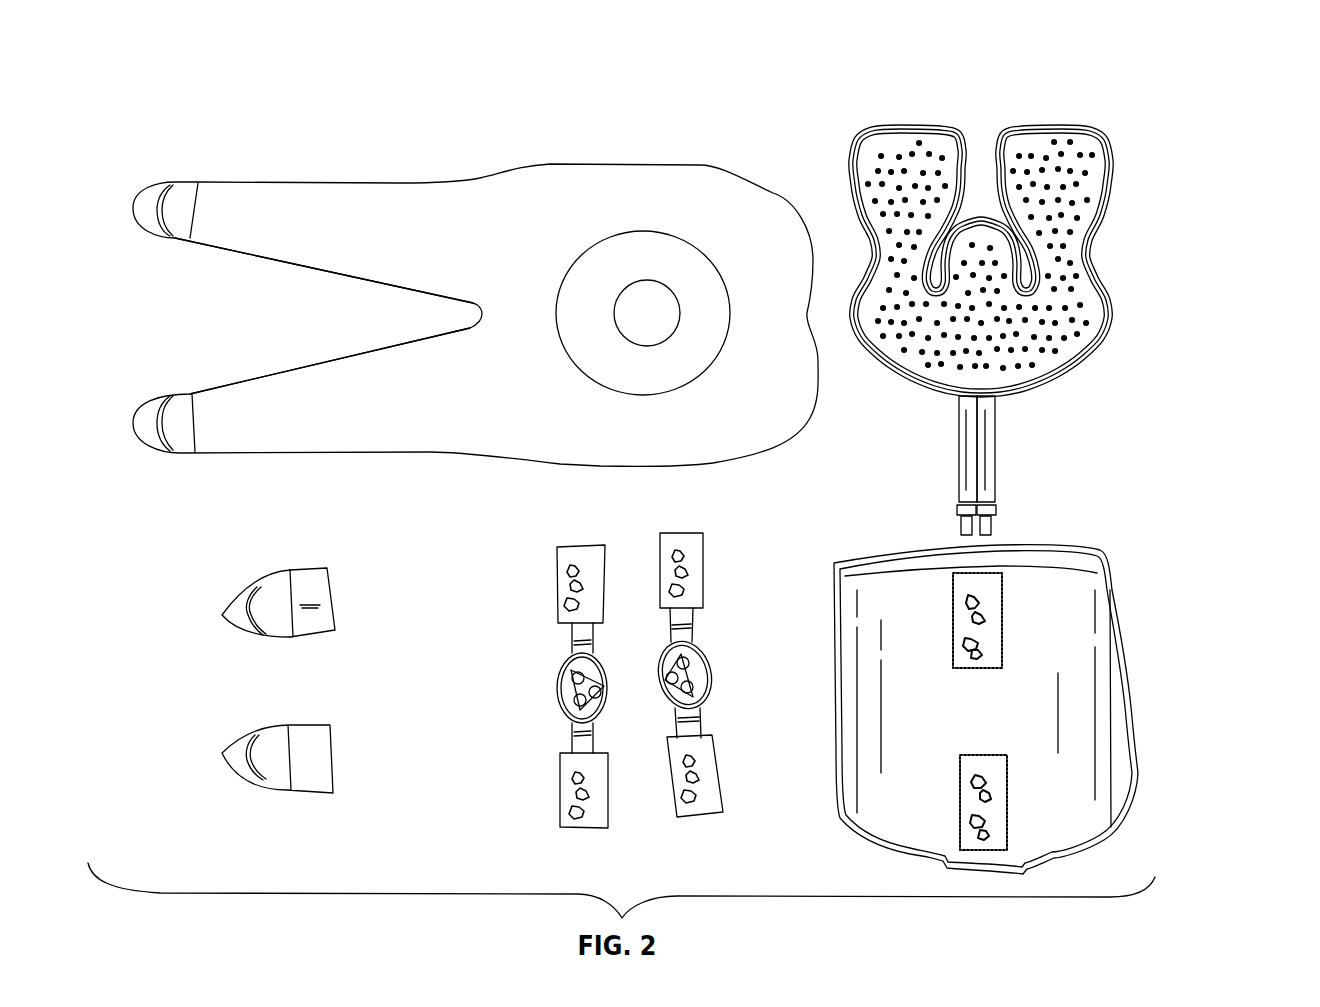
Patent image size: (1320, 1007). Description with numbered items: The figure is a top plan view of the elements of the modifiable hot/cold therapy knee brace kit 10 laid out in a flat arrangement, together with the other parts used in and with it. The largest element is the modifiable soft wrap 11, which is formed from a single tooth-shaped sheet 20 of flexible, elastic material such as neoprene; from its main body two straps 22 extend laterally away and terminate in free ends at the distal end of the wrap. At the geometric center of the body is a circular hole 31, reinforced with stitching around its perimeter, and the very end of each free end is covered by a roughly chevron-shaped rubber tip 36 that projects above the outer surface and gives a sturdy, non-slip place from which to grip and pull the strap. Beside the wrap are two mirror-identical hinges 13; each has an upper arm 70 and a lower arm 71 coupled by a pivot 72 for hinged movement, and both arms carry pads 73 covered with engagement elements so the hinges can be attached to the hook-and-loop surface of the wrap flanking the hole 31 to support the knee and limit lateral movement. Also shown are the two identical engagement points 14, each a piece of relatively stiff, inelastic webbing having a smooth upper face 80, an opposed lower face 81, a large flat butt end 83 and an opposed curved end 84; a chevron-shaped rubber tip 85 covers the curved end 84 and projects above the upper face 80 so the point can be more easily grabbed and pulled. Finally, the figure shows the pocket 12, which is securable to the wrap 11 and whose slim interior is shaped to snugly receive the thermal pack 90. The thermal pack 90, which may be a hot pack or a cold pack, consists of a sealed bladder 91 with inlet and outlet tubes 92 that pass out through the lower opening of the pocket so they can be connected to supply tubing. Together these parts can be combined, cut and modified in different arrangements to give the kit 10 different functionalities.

The kit 10 is at (1261, 110).
The soft wrap 11 is at (459, 269).
The pocket 12 is at (1125, 592).
The hinge 13 is at (668, 658).
The engagement point 14 is at (286, 667).
The sheet 20 is at (605, 187).
The straps 22 is at (312, 395).
The circular hole 31 is at (664, 313).
The rubber tip 36 is at (145, 217).
The upper arm 70 is at (695, 618).
The lower arm 71 is at (705, 722).
The pivot 72 is at (712, 678).
The pads 73 is at (693, 550).
The upper face 80 is at (309, 596).
The lower face 81 is at (282, 615).
The butt end 83 is at (336, 598).
The curved end 84 is at (220, 617).
The rubber tip 85 is at (240, 627).
The thermal pack 90 is at (1023, 332).
The sealed bladder 91 is at (1088, 248).
The inlet and outlet tubes 92 is at (997, 448).